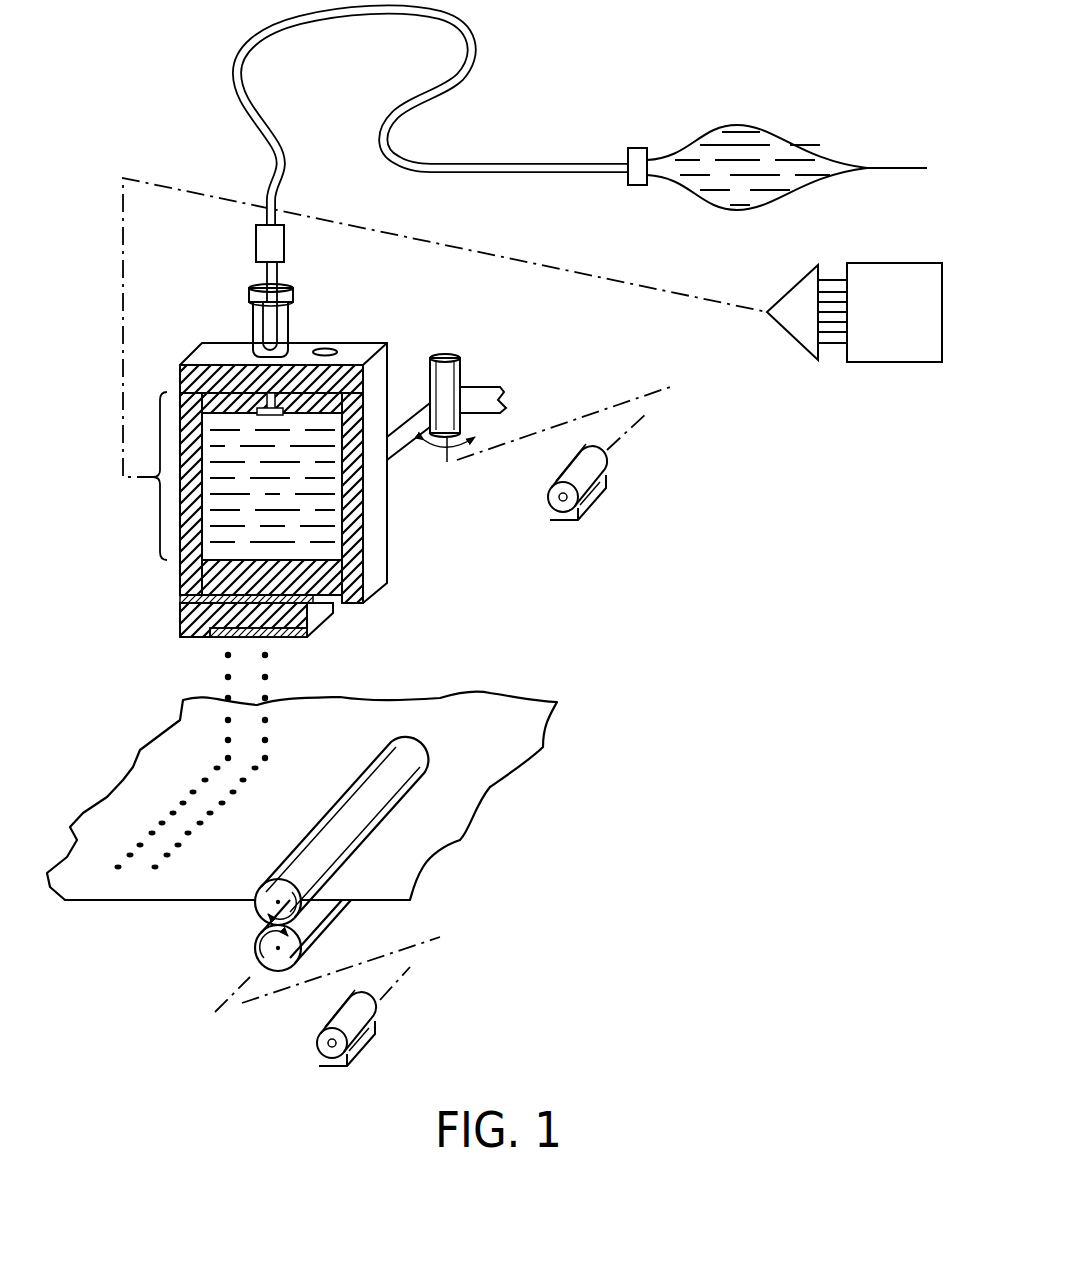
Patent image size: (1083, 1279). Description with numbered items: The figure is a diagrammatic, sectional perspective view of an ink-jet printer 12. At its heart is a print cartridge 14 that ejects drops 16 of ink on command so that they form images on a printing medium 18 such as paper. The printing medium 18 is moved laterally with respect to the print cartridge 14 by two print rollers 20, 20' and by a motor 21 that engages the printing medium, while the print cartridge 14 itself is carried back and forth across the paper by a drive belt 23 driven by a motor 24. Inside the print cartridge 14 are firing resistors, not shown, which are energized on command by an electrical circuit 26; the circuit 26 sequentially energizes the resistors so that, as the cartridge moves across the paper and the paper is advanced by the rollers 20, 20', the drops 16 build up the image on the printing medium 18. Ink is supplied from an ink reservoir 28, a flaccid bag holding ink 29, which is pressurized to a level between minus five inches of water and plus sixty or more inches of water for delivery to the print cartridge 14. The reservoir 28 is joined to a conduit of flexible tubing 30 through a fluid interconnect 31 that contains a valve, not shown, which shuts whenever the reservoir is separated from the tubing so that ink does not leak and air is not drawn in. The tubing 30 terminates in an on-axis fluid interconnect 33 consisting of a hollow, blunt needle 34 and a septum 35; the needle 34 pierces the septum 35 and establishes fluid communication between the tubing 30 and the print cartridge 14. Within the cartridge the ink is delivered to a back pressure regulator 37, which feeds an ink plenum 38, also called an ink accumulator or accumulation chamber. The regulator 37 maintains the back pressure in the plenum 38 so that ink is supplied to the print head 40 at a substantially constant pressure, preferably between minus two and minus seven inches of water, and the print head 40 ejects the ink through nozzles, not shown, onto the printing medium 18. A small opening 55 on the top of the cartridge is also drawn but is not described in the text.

The printer 12 is at (562, 623).
The print cartridge 14 is at (377, 524).
The drops 16 is at (230, 740).
The printing medium 18 is at (513, 747).
The print roller 20 is at (314, 836).
The print roller 20' is at (274, 938).
The motor 21 is at (368, 1013).
The drive belt 23 is at (477, 393).
The motor 24 is at (604, 492).
The electrical circuit 26 is at (890, 275).
The ink reservoir 28 is at (712, 130).
The ink 29 is at (812, 168).
The flexible tubing 30 is at (512, 163).
The fluid interconnect 31 is at (633, 150).
The on-axis fluid interconnect 33 is at (289, 270).
The hollow, blunt needle 34 is at (262, 264).
The septum 35 is at (250, 289).
The back pressure regulator 37 is at (270, 428).
The ink plenum 38 is at (213, 522).
The print head 40 is at (215, 633).
The vent hole 55 is at (326, 348).